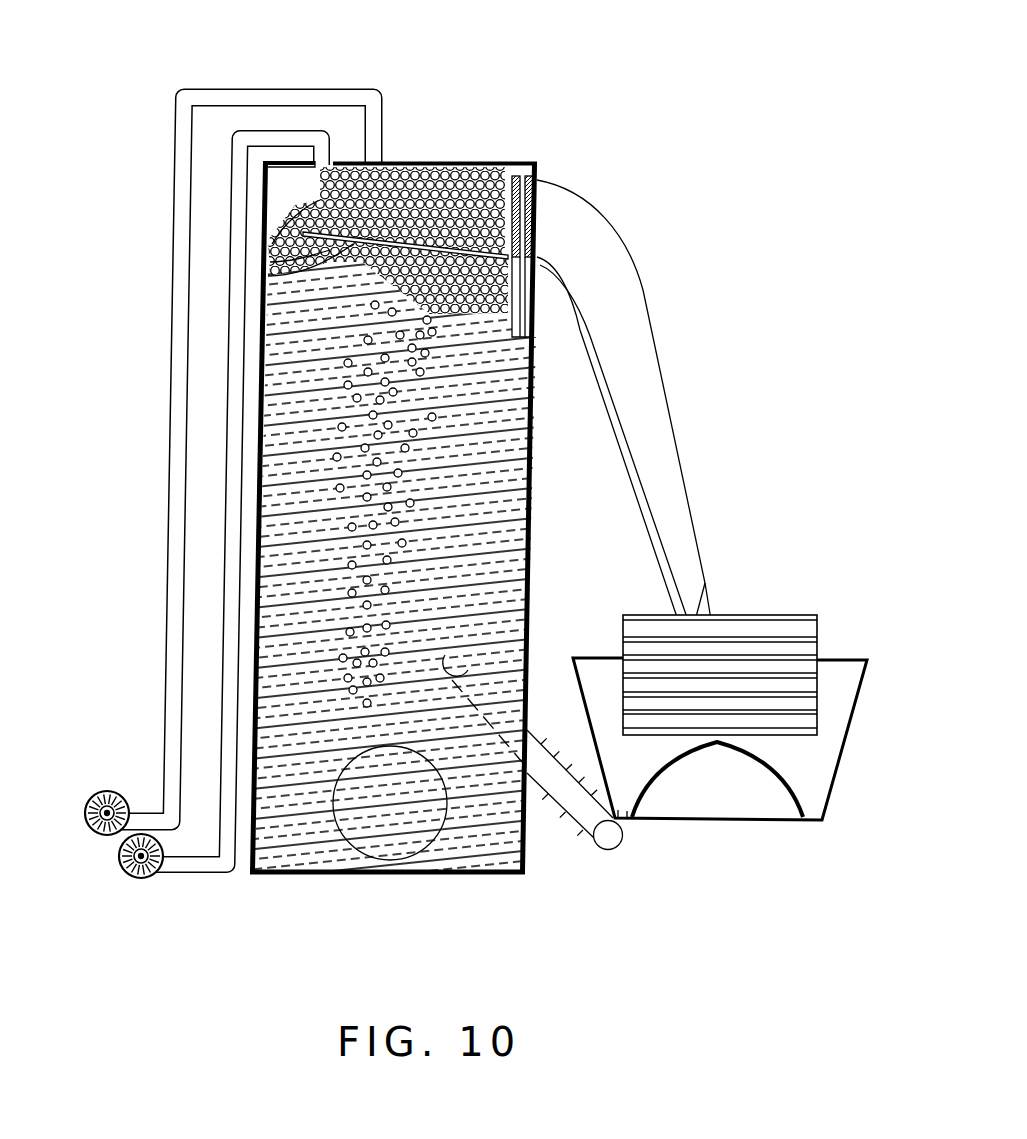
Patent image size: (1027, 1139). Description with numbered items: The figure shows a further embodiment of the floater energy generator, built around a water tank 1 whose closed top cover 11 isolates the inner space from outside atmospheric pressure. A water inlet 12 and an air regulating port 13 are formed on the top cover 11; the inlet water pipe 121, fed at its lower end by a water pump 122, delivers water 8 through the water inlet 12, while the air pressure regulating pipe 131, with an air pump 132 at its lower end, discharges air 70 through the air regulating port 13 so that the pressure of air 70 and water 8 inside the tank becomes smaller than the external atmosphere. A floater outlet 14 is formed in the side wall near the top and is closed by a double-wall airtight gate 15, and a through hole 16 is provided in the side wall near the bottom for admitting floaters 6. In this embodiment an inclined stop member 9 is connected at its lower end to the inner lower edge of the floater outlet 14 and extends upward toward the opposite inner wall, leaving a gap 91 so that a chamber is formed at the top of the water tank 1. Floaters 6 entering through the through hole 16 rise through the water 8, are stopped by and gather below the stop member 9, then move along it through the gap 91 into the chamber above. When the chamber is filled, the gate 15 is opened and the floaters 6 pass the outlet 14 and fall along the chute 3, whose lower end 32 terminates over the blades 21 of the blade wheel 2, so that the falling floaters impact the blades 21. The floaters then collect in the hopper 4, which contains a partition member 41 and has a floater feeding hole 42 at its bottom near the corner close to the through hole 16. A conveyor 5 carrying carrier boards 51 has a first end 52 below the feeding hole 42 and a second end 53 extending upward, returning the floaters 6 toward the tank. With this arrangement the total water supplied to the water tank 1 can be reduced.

The water tank 1 is at (553, 516).
The blade wheel 2 is at (716, 633).
The chute 3 is at (643, 406).
The hopper 4 is at (720, 739).
The conveyor 5 is at (581, 833).
The floaters 6 is at (268, 263).
The water 8 is at (465, 806).
The inclined stop member 9 is at (323, 280).
The top cover 11 is at (495, 162).
The water inlet 12 is at (340, 167).
The air regulating port 13 is at (396, 162).
The floater outlet 14 is at (537, 250).
The double-wall airtight gate 15 is at (537, 213).
The through hole 16 is at (372, 830).
The blades 21 is at (645, 648).
The lower end of the chute 32 is at (701, 600).
The partition member 41 is at (677, 763).
The floater feeding hole 42 is at (628, 820).
The carrier boards 51 is at (535, 792).
The first end of the conveyor 52 is at (607, 850).
The second end of the conveyor 53 is at (440, 672).
The air 70 is at (432, 165).
The gap 91 is at (273, 228).
The inlet water pipe 121 is at (222, 522).
The water pump 122 is at (120, 856).
The air pressure regulating pipe 131 is at (226, 90).
The air pump 132 is at (93, 800).